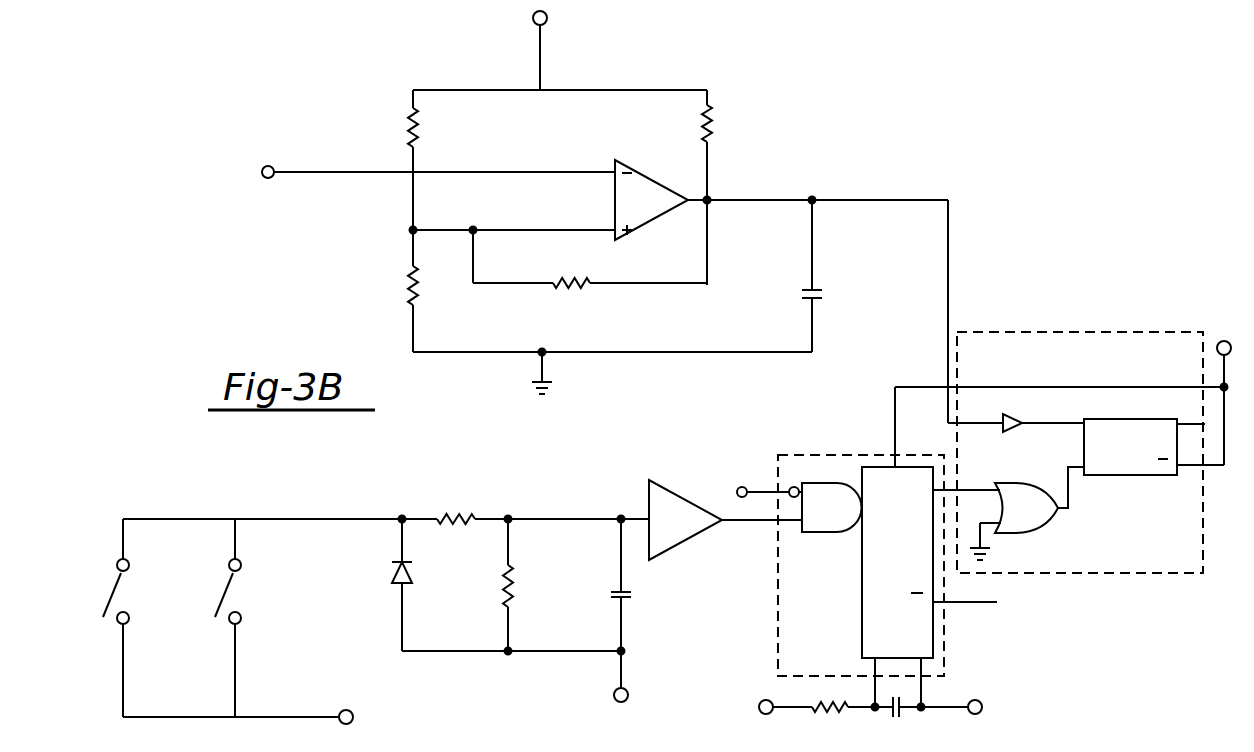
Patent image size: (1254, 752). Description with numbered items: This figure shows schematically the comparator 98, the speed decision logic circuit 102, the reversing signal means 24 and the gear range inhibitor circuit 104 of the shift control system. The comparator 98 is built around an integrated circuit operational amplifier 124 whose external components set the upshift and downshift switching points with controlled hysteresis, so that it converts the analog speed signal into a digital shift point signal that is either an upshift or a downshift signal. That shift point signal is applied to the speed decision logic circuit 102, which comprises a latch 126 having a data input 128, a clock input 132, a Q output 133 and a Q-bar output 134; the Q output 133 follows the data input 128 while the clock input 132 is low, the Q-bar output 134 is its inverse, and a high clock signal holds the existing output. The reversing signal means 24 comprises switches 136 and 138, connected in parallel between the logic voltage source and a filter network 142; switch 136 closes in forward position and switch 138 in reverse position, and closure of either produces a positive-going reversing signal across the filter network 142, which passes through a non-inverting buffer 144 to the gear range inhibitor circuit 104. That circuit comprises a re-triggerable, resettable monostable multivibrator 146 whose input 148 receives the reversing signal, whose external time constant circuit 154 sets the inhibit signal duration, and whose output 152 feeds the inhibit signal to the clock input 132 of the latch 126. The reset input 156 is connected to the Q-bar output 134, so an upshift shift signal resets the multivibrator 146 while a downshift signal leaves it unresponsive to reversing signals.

The comparator 98 is at (605, 217).
The operational amplifier 124 is at (643, 175).
The reversing signal means 24 is at (252, 593).
The switch 138 is at (113, 585).
The switch 136 is at (226, 587).
The filter network 142 is at (519, 506).
The non-inverting buffer 144 is at (668, 552).
The gear range inhibitor circuit 104 is at (773, 591).
The multivibrator 146 is at (855, 410).
The input 148 is at (786, 521).
The output 152 is at (928, 512).
The reset input 156 is at (897, 452).
The external time constant circuit 154 is at (862, 719).
The speed decision logic circuit 102 is at (1160, 278).
The latch 126 is at (1068, 298).
The data input 128 is at (966, 422).
The Q output 133 is at (1186, 422).
The Q-bar output 134 is at (1178, 477).
The clock input 132 is at (993, 460).